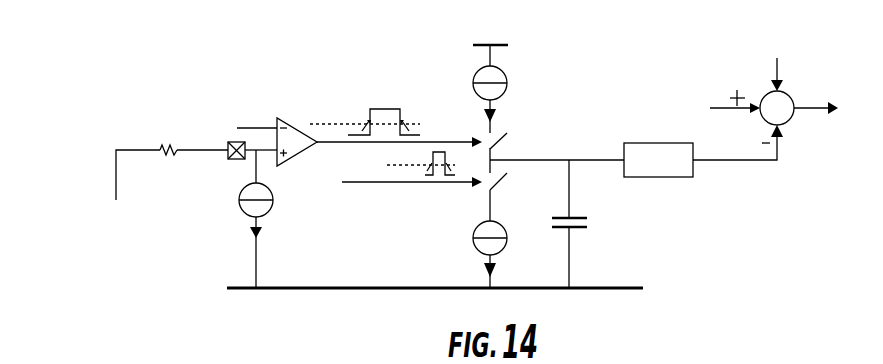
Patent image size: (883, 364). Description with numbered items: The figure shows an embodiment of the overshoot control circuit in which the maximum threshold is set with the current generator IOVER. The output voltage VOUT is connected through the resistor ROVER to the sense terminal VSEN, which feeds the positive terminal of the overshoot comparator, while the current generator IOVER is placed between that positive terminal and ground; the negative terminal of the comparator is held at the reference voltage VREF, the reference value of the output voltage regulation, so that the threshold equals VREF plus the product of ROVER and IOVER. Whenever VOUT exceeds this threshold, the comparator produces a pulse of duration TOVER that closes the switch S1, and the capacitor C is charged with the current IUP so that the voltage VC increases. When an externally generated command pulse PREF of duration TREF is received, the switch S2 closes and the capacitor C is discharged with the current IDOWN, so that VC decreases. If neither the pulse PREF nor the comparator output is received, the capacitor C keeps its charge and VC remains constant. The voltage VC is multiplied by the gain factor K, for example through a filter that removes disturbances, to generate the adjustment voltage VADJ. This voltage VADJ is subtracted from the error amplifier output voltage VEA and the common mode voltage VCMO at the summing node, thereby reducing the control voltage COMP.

The output voltage VOUT is at (132, 197).
The resistor ROVER is at (185, 130).
The sense terminal VSEN is at (237, 167).
The current generator IOVER is at (282, 219).
The reference voltage VREF is at (255, 108).
The pulse duration TOVER is at (396, 118).
The command pulse duration TREF is at (402, 160).
The command pulse PREF is at (389, 177).
The charging current IUP is at (472, 89).
The switch S1 is at (511, 142).
The switch S2 is at (512, 178).
The discharging current IDOWN is at (456, 239).
The capacitor voltage VC is at (557, 141).
The capacitor C is at (579, 224).
The gain factor K is at (658, 160).
The adjustment voltage VADJ is at (738, 142).
The common mode voltage VCMO is at (774, 58).
The error amplifier output voltage VEA is at (716, 106).
The control voltage COMP is at (821, 94).